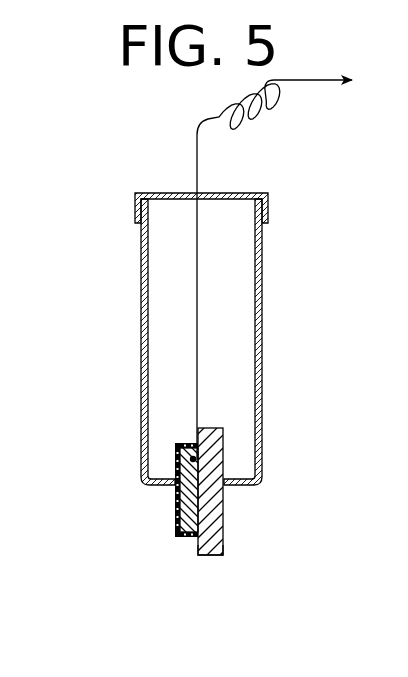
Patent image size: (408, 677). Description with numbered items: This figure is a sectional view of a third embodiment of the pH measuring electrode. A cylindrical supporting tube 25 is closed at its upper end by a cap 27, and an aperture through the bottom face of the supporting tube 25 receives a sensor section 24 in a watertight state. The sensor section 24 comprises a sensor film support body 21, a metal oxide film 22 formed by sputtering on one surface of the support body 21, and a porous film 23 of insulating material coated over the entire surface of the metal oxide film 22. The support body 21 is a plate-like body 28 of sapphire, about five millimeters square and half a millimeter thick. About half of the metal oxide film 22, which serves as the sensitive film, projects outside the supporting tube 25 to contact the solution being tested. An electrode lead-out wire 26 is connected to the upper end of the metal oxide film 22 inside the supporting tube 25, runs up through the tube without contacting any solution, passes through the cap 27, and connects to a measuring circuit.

The sensor film support body 21 is at (231, 519).
The metal oxide film 22 is at (187, 524).
The porous film 23 is at (175, 500).
The sensor section 24 is at (192, 527).
The supporting tube 25 is at (262, 390).
The electrode lead-out wire 26 is at (197, 141).
The cap 27 is at (238, 195).
The plate-like body 28 is at (216, 551).